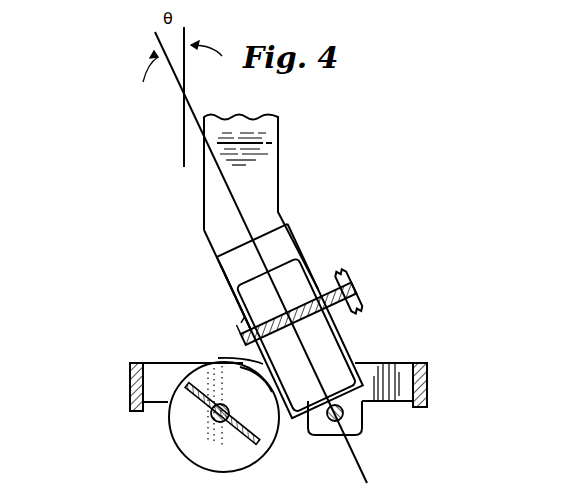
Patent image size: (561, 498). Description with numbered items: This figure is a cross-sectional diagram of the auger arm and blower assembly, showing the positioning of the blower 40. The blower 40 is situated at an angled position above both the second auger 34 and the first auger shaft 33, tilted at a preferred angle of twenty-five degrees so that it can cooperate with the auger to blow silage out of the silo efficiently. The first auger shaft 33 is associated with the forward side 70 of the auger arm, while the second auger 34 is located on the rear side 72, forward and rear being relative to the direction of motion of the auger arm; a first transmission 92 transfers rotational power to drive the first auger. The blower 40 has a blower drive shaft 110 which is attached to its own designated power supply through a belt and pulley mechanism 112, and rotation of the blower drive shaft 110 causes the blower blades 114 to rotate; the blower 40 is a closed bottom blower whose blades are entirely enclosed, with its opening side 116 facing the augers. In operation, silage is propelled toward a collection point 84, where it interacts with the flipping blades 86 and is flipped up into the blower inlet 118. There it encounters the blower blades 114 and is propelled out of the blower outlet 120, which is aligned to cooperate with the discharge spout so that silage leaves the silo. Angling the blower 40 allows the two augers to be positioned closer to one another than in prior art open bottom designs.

The blower outlet 120 is at (268, 133).
The blower 40 is at (304, 230).
The blower blades 114 is at (305, 266).
The belt and pulley mechanism 112 is at (345, 279).
The opening side 116 is at (216, 271).
The blower drive shaft 110 is at (228, 308).
The blower inlet 118 is at (257, 356).
The rear side 72 is at (130, 385).
The forward side 70 is at (428, 385).
The first transmission 92 is at (352, 428).
The first auger shaft 33 is at (330, 419).
The second auger 34 is at (193, 451).
The flipping blades 86 is at (232, 430).
The collection point 84 is at (288, 426).